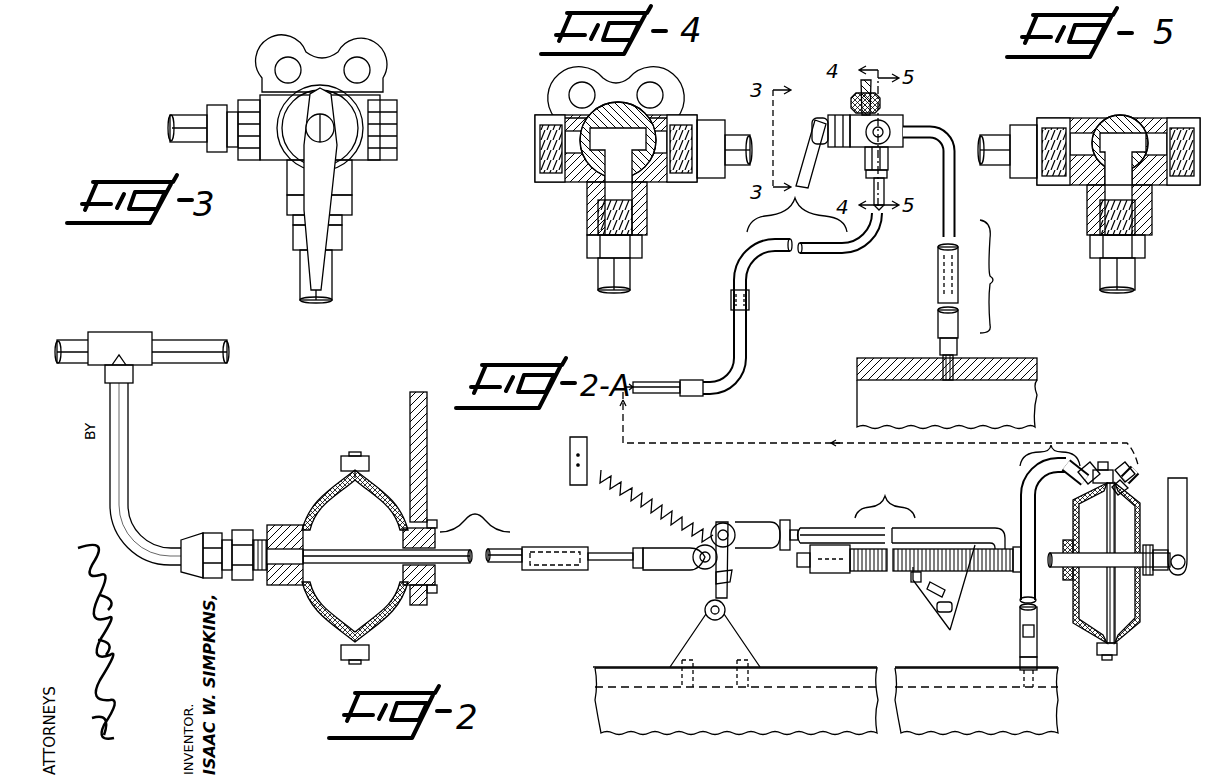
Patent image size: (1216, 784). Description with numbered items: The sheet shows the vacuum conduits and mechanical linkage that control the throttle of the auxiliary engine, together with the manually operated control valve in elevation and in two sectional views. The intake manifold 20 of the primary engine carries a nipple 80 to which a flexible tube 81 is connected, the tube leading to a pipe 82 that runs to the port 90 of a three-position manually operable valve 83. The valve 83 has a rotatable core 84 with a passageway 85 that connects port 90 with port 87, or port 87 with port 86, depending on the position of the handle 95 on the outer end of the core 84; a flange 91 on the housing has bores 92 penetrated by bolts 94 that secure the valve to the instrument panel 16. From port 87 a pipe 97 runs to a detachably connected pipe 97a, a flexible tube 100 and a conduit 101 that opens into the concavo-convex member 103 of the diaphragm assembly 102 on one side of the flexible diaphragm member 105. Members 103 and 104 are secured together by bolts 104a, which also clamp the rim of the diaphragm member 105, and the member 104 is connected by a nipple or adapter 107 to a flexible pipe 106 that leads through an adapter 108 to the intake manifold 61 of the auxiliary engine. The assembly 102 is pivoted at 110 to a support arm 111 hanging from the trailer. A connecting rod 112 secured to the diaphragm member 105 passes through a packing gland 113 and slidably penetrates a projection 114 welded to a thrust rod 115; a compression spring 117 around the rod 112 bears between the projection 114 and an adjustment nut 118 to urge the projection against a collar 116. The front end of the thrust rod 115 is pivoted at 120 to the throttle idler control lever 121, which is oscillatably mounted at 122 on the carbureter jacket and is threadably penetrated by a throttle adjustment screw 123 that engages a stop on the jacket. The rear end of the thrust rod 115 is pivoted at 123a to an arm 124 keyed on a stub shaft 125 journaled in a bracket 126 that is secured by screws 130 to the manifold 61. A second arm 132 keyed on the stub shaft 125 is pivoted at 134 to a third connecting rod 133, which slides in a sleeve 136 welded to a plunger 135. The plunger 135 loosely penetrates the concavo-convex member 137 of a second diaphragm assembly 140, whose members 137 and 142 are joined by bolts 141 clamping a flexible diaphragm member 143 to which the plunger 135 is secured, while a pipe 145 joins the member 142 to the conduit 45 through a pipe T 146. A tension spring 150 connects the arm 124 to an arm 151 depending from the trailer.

In FIG. 2-A, the instrument panel 16 is at (860, 86).
In FIG. 2-A, the intake manifold 20 is at (1028, 358).
In FIG. 2, the pipe or conduit 45 is at (185, 341).
In FIG. 2, the intake manifold 61 is at (896, 668).
In FIG. 2-A, the nipple or conduit 80 is at (957, 347).
In FIG. 2-A, the flexible tube 81 is at (937, 325).
In FIG. 3, the pipe 82 is at (190, 118).
In FIG. 4, the pipe 82 is at (740, 135).
In FIG. 5, the pipe 82 is at (992, 138).
In FIG. 2-A, the pipe 82 is at (956, 207).
In FIG. 3, the manually operable valve 83 is at (278, 172).
In FIG. 4, the manually operable valve 83 is at (546, 101).
In FIG. 5, the manually operable valve 83 is at (1085, 191).
In FIG. 2-A, the manually operable valve 83 is at (906, 116).
In FIG. 4, the core 84 is at (585, 170).
In FIG. 5, the core 84 is at (1113, 130).
In FIG. 4, the passageway 85 is at (618, 140).
In FIG. 5, the passageway 85 is at (1125, 145).
In FIG. 4, the port 86 is at (538, 160).
In FIG. 5, the port 86 is at (1178, 130).
In FIG. 2-A, the port 86 is at (886, 142).
In FIG. 4, the port 87 is at (640, 198).
In FIG. 5, the port 87 is at (1132, 200).
In FIG. 4, the port 90 is at (658, 160).
In FIG. 5, the port 90 is at (1078, 140).
In FIG. 3, the flange 91 is at (322, 60).
In FIG. 4, the flange 91 is at (666, 82).
In FIG. 3, the bores 92 is at (275, 62).
In FIG. 4, the bores 92 is at (570, 85).
In FIG. 2-A, the bolts 94 is at (850, 103).
In FIG. 3, the handle 95 is at (326, 180).
In FIG. 2-A, the handle 95 is at (806, 155).
In FIG. 3, the pipe or conduit 97 is at (333, 282).
In FIG. 4, the pipe or conduit 97 is at (632, 272).
In FIG. 5, the pipe or conduit 97 is at (1136, 272).
In FIG. 2-A, the pipe or conduit 97 is at (817, 250).
In FIG. 2-A, the pipe or conduit 97a is at (745, 285).
In FIG. 2-A, the flexible tube 100 is at (748, 348).
In FIG. 2-A, the pipe or conduit 101 is at (660, 392).
In FIG. 2, the pipe or conduit 101 is at (1140, 472).
In FIG. 2, the diaphragm assembly 102 is at (1128, 630).
In FIG. 2, the concavo-convex member 103 is at (1138, 612).
In FIG. 2, the concavo-convex member 104 is at (1076, 620).
In FIG. 2, the bolts 104a is at (1100, 654).
In FIG. 2, the flexible diaphragm member 105 is at (1117, 516).
In FIG. 2, the flexible pipe or conduit 106 is at (1020, 492).
In FIG. 2, the nipple or adapter 107 is at (1100, 468).
In FIG. 2, the nipple or adapter 108 is at (1020, 655).
In FIG. 2, the pivot connection 110 is at (1178, 570).
In FIG. 2, the support arm 111 is at (1187, 490).
In FIG. 2, the connecting rod or link 112 is at (1090, 552).
In FIG. 2, the packing gland 113 is at (1065, 546).
In FIG. 2, the projection 114 is at (822, 574).
In FIG. 2, the thrust rod or second connecting rod 115 is at (940, 528).
In FIG. 2, the collar 116 is at (803, 568).
In FIG. 2, the compression spring 117 is at (868, 572).
In FIG. 2, the adjustment nut 118 is at (1017, 546).
In FIG. 2, the pivot connection 120 is at (1000, 532).
In FIG. 2, the throttle idler control lever 121 is at (950, 628).
In FIG. 2, the pivot point 122 is at (953, 606).
In FIG. 2, the throttle adjustment screw 123 is at (912, 580).
In FIG. 2, the pivot connection 123a is at (724, 522).
In FIG. 2, the arm 124 is at (730, 576).
In FIG. 2, the stub shaft 125 is at (726, 611).
In FIG. 2, the bracket 126 is at (738, 636).
In FIG. 2, the screws 130 is at (755, 652).
In FIG. 2, the arm 132 is at (716, 588).
In FIG. 2, the third connecting rod 133 is at (600, 553).
In FIG. 2, the pivot connection 134 is at (700, 568).
In FIG. 2, the plunger or rod 135 is at (490, 566).
In FIG. 2, the tubular member or sleeve 136 is at (540, 547).
In FIG. 2, the concavo-convex member 137 is at (398, 612).
In FIG. 2, the diaphragm assembly or housing 140 is at (330, 618).
In FIG. 2, the bolts 141 is at (340, 462).
In FIG. 2, the concavo-convex member 142 is at (283, 524).
In FIG. 2, the flexible diaphragm member 143 is at (318, 506).
In FIG. 2, the pipe or conduit 145 is at (128, 466).
In FIG. 2, the pipe T 146 is at (142, 368).
In FIG. 2, the tension spring 150 is at (670, 512).
In FIG. 2, the arm 151 is at (569, 455).